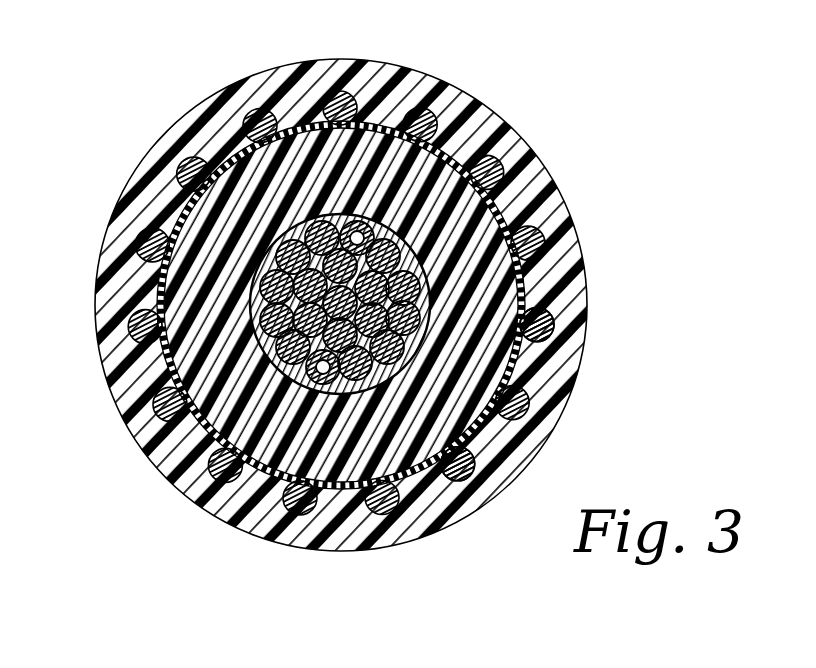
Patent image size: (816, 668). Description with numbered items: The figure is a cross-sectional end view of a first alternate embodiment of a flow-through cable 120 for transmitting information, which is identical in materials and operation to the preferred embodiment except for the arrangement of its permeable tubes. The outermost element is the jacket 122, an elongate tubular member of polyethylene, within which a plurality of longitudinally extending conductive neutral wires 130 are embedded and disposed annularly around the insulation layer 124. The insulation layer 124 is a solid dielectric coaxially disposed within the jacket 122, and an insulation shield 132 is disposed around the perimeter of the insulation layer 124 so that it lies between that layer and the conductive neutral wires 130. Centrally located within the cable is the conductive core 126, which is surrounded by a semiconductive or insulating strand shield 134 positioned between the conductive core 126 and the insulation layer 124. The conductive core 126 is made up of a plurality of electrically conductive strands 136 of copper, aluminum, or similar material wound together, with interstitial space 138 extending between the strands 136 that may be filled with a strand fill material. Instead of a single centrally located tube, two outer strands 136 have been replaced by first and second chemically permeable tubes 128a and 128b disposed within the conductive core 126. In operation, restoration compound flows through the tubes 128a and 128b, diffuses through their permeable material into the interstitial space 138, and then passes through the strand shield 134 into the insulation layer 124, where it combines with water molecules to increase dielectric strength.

The cable 120 is at (503, 82).
The jacket 122 is at (545, 180).
The insulation layer 124 is at (202, 300).
The conductive core 126 is at (548, 302).
The first chemically permeable tube 128a is at (353, 222).
The second chemically permeable tube 128b is at (334, 386).
The conductive neutral wires 130 is at (143, 228).
The insulation shield 132 is at (225, 155).
The strand shield 134 is at (471, 480).
The strands 136 is at (110, 387).
The interstitial space 138 is at (258, 372).